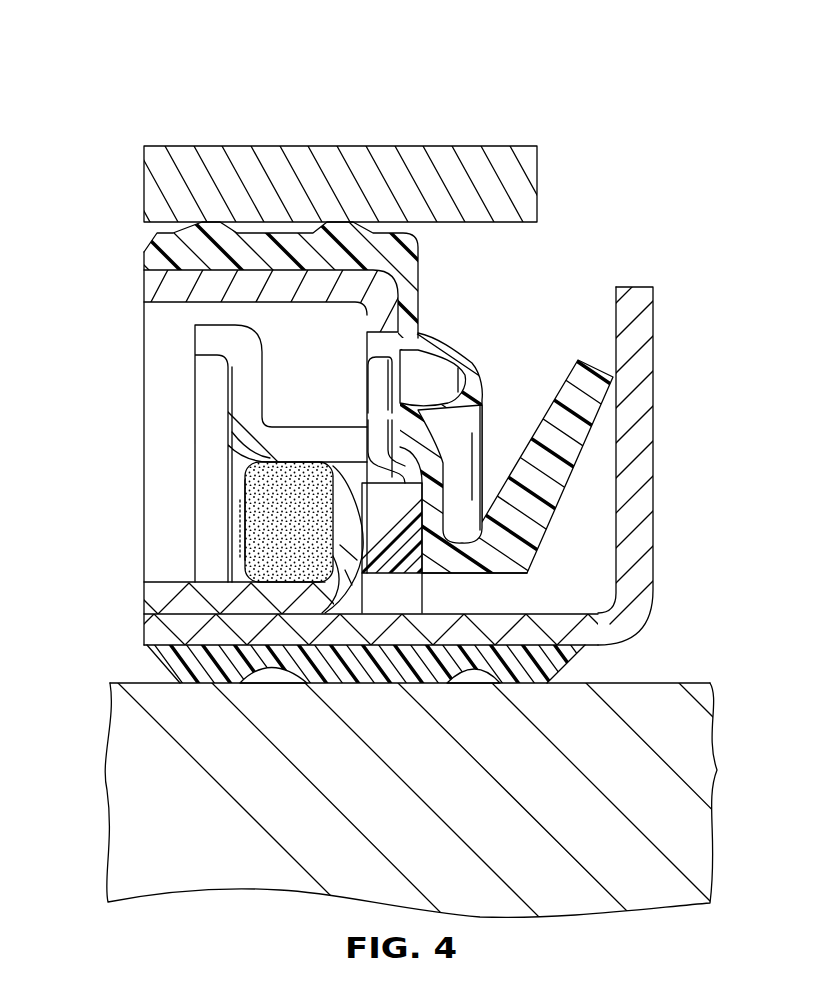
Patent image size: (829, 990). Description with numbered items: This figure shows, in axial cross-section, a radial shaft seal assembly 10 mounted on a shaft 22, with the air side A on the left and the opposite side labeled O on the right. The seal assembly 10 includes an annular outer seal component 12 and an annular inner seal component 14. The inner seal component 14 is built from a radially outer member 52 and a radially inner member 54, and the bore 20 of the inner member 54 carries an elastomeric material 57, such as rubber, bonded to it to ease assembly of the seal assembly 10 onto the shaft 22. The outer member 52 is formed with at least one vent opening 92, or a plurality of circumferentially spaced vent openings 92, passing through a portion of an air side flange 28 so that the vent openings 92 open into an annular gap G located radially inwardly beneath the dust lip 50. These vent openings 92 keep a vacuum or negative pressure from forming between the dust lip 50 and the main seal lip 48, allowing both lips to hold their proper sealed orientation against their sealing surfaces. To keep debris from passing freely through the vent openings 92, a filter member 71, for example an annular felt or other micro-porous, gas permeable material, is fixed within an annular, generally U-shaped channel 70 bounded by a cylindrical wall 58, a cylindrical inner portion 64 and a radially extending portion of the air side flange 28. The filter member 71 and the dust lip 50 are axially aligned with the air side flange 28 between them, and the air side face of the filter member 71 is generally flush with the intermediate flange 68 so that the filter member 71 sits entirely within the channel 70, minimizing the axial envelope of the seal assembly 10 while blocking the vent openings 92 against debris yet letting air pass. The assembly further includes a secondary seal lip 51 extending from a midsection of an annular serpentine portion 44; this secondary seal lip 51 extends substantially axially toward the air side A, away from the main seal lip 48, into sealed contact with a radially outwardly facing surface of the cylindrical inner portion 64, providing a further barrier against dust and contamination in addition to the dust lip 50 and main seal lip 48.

The seal assembly 10 is at (383, 390).
The annular outer seal component 12 is at (96, 186).
The annular inner seal component 14 is at (383, 471).
The bore 20 is at (547, 660).
The shaft 22 is at (685, 747).
The air side flange 28 is at (343, 523).
The annular serpentine portion 44 is at (376, 404).
The main seal lip 48 is at (560, 378).
The dust lip 50 is at (372, 576).
The secondary seal lip 51 is at (362, 437).
The radially outer member 52 is at (143, 600).
The radially inner member 54 is at (143, 633).
The elastomeric material 57 is at (187, 663).
The cylindrical wall 58 is at (230, 600).
The cylindrical inner portion 64 is at (258, 474).
The intermediate flange 68 is at (242, 381).
The U-shaped channel 70 is at (238, 541).
The filter member 71 is at (267, 512).
The vent opening 92 is at (350, 580).
The annular gap G is at (413, 600).
The air side A is at (71, 423).
The oil side O is at (717, 328).